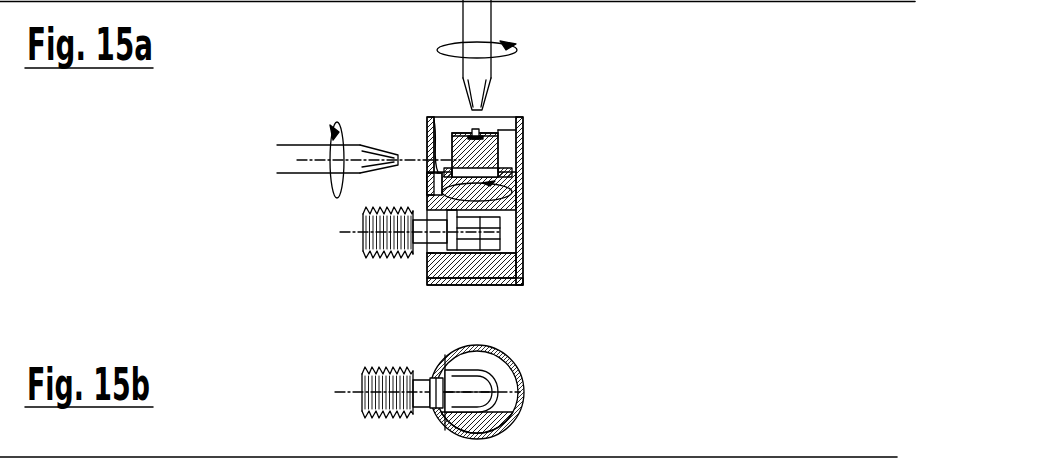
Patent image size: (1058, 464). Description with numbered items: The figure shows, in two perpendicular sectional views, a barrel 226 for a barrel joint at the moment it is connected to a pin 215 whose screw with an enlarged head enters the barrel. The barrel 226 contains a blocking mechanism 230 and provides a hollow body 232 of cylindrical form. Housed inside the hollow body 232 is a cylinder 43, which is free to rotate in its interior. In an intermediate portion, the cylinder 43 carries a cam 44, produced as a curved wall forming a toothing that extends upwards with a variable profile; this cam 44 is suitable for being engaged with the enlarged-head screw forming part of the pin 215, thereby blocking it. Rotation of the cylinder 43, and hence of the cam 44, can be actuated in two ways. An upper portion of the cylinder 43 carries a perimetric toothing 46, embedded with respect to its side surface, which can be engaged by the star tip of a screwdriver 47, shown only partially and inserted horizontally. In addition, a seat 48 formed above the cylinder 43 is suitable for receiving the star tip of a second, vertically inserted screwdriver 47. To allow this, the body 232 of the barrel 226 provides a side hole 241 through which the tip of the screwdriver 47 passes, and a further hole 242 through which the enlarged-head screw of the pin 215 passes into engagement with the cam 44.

In FIG. 15A, the cylinder 43 is at (503, 206).
In FIG. 15A, the cam 44 is at (483, 237).
In FIG. 15B, the cam 44 is at (490, 367).
In FIG. 15A, the perimetric toothing 46 is at (460, 160).
In FIG. 15A, the screwdriver 47 is at (300, 147).
In FIG. 15A, the seat 48 is at (476, 132).
In FIG. 15A, the pin 215 is at (362, 250).
In FIG. 15B, the pin 215 is at (362, 377).
In FIG. 15A, the barrel 226 is at (526, 167).
In FIG. 15B, the barrel 226 is at (527, 398).
In FIG. 15A, the blocking mechanism 230 is at (526, 253).
In FIG. 15A, the hollow body 232 is at (525, 124).
In FIG. 15B, the hollow body 232 is at (516, 375).
In FIG. 15A, the side hole 241 is at (432, 152).
In FIG. 15B, the further hole 242 is at (430, 378).